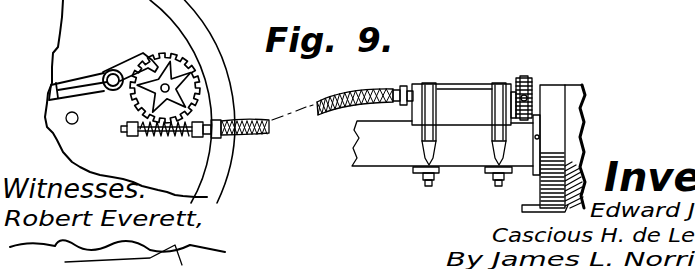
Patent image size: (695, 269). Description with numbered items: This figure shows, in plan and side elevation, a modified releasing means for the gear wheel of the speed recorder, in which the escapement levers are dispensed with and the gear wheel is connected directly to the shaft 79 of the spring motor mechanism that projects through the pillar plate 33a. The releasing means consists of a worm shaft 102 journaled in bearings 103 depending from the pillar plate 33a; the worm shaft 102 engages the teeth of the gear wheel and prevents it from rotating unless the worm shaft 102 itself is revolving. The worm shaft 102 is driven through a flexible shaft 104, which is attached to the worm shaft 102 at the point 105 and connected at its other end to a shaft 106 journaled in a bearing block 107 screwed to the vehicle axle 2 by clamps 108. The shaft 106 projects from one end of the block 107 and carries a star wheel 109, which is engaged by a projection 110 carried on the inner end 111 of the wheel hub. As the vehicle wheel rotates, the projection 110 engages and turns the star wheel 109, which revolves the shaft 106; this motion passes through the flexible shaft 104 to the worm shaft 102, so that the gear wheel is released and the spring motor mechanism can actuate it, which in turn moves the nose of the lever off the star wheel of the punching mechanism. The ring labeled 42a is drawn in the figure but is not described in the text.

The axle 2 is at (442, 153).
The pillar plate 33a is at (126, 98).
The rim 42a is at (203, 87).
The shaft 79 is at (166, 87).
The worm shaft 102 is at (158, 140).
The bearings 103 is at (128, 138).
The flexible shaft 104 is at (271, 131).
The attachment 105 is at (221, 172).
The shaft 106 is at (407, 89).
The bearing block 107 is at (464, 104).
The clamps 108 is at (501, 88).
The star wheel 109 is at (529, 77).
The projection 110 is at (522, 209).
The inner end of the wheel hub 111 is at (539, 137).